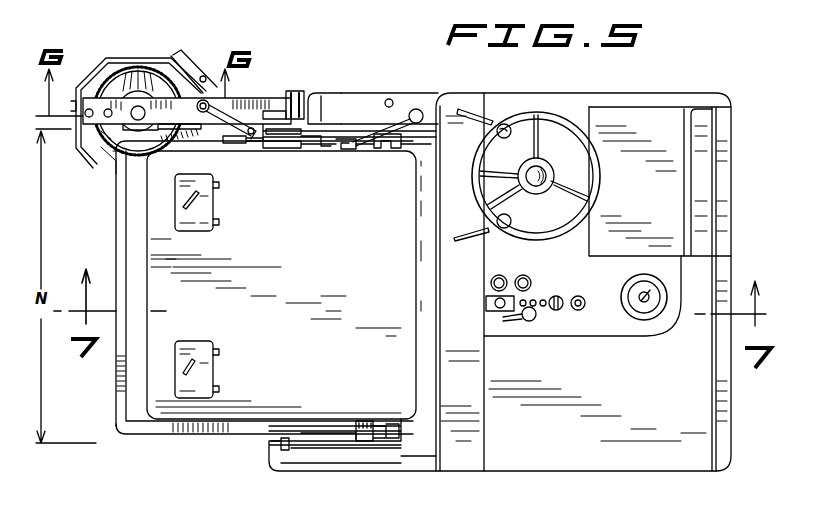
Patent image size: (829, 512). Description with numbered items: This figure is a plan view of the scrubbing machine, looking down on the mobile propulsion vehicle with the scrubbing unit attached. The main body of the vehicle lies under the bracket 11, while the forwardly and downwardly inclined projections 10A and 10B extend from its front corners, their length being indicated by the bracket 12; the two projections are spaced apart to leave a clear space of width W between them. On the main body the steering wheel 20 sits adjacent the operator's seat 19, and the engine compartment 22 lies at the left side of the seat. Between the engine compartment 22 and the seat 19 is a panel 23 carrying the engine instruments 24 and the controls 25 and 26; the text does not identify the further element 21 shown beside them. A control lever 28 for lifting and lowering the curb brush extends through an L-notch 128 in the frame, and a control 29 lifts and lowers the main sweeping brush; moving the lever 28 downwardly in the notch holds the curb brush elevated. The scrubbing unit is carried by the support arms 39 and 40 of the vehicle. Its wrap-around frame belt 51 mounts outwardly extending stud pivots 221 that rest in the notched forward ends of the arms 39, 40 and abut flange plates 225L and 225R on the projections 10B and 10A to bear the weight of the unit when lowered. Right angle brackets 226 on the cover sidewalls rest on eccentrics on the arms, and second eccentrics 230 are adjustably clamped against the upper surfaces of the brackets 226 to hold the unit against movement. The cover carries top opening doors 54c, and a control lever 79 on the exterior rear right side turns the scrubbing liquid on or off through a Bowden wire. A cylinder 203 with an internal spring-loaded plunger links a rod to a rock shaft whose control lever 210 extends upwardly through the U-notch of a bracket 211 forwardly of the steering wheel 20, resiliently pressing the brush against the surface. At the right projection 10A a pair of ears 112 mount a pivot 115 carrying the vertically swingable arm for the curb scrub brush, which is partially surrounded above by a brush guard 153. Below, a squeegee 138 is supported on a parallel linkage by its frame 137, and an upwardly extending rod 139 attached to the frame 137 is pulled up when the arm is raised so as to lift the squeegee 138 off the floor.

The brush guard 153 is at (103, 60).
The squeegee 138 is at (191, 57).
The frame 137 is at (243, 120).
The flange plate 225R is at (268, 116).
The pivot 115 is at (291, 89).
The ears 112 is at (305, 91).
The support arm 40 is at (329, 128).
The forwardly and downwardly inclined projection 10A is at (371, 103).
The control lever 210 is at (421, 109).
The rod 139 is at (203, 112).
The cylinder 203 is at (270, 148).
The bracket 211 is at (350, 148).
The control lever 79 is at (395, 146).
The frame belt 51 is at (182, 428).
The top opening door 54c is at (211, 208).
The bracket 12 is at (432, 480).
The stud pivot 221 is at (284, 437).
The flange plate 225L is at (325, 466).
The support arm 39 is at (344, 436).
The right angle bracket 226 is at (361, 421).
The second eccentric 230 is at (384, 430).
The bracket 11 is at (728, 480).
The forwardly and downwardly inclined projection 10B is at (413, 456).
The operator's seat 19 is at (655, 193).
The steering wheel 20 is at (566, 118).
The control lever 28 is at (491, 122).
The L-notch 128 is at (459, 115).
The control 29 is at (480, 230).
The engine compartment 22 is at (608, 376).
The engine instruments 24 is at (512, 280).
The controls 25 is at (590, 296).
The controls 26 is at (528, 321).
The panel 23 is at (615, 281).
The knob 21 is at (623, 318).